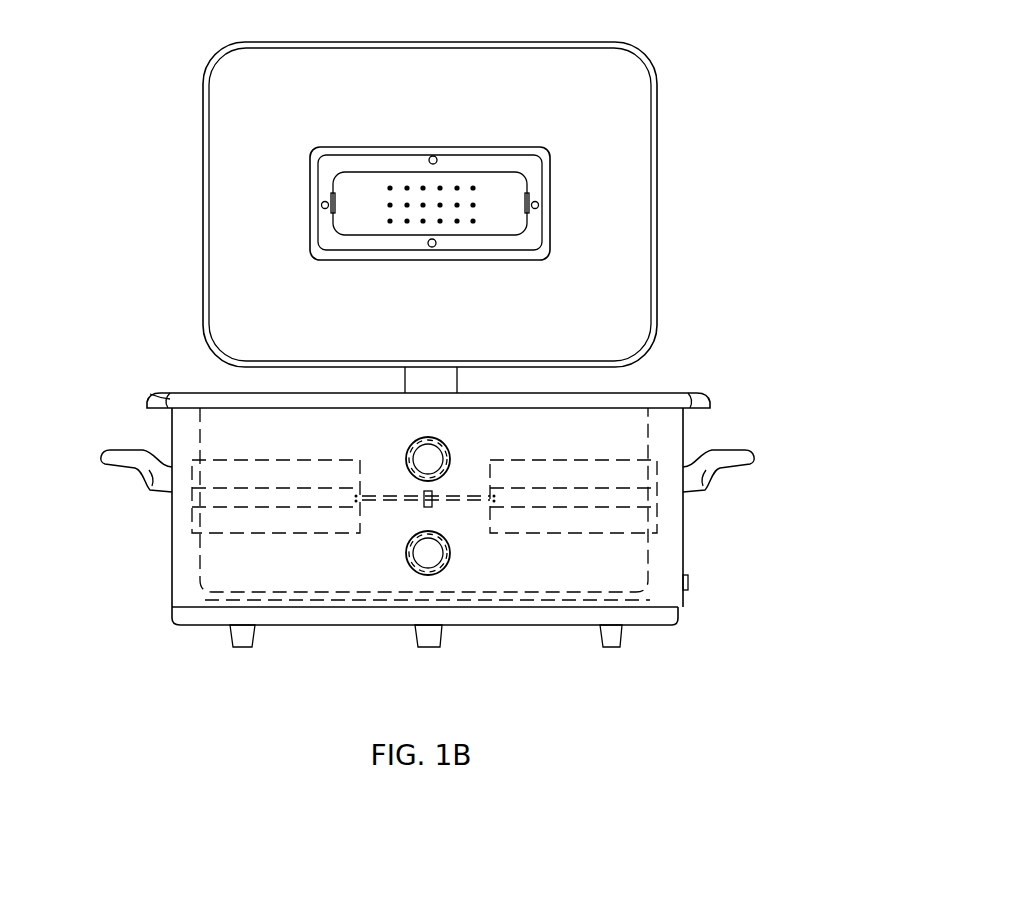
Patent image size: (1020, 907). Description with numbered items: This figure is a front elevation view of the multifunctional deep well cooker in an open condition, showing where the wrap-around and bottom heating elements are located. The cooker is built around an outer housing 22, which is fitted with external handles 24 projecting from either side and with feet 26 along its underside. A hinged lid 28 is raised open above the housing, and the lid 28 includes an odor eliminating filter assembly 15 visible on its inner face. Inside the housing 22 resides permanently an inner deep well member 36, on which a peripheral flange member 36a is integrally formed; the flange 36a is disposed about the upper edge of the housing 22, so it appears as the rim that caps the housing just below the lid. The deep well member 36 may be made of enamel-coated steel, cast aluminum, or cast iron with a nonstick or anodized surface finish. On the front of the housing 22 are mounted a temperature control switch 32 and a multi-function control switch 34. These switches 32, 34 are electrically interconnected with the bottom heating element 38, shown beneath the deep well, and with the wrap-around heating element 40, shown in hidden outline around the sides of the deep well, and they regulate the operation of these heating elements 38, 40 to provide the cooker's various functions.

The odor eliminating filter assembly 15 is at (356, 220).
The outer housing 22 is at (675, 550).
The external handles 24 is at (750, 462).
The feet 26 is at (235, 636).
The hinged lid 28 is at (627, 83).
The temperature control switch 32 is at (436, 456).
The multi-function control switch 34 is at (433, 553).
The inner deep well member 36 is at (648, 422).
The peripheral flange member 36a is at (663, 402).
The bottom heating element 38 is at (622, 600).
The wrap-around heating element 40 is at (648, 517).